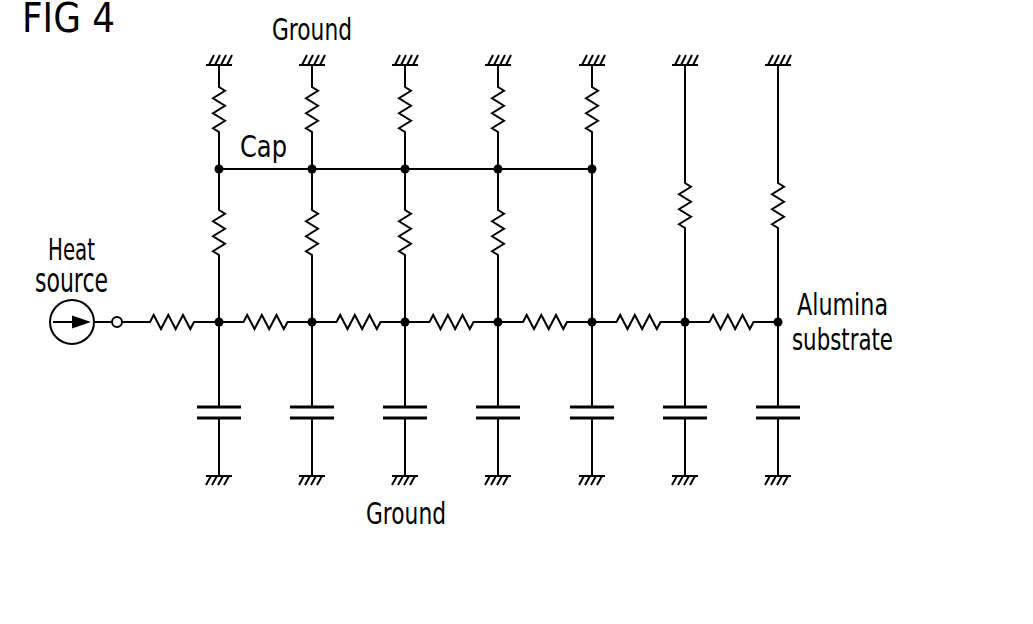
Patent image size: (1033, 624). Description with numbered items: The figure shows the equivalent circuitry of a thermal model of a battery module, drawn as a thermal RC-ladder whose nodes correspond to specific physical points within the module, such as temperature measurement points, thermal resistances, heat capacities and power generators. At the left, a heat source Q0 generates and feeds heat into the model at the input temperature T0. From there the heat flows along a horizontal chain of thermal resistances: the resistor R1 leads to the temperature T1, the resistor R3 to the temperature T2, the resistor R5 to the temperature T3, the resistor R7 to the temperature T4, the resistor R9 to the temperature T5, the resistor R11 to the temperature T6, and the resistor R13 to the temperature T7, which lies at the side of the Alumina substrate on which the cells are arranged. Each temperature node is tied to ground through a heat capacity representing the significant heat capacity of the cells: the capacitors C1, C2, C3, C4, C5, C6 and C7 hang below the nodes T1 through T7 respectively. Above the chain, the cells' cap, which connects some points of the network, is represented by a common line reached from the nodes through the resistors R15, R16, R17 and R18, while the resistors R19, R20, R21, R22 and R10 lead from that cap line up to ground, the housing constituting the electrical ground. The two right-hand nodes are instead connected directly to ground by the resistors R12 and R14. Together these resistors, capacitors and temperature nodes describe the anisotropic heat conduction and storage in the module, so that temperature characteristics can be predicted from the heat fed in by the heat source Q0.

The heat source Q0 is at (60, 322).
The temperature T0 is at (116, 344).
The temperature T1 is at (206, 344).
The temperature T2 is at (299, 344).
The temperature T3 is at (392, 344).
The temperature T4 is at (485, 344).
The temperature T5 is at (578, 344).
The temperature T6 is at (672, 344).
The temperature T7 is at (765, 344).
The resistor R1 is at (170, 300).
The resistor R3 is at (265, 300).
The resistor R5 is at (358, 300).
The resistor R7 is at (451, 300).
The resistor R9 is at (545, 300).
The resistor R11 is at (638, 300).
The resistor R13 is at (731, 300).
The resistor R10 is at (566, 117).
The resistor R12 is at (659, 193).
The resistor R14 is at (752, 193).
The resistor R15 is at (193, 245).
The resistor R16 is at (286, 245).
The resistor R17 is at (379, 245).
The resistor R18 is at (472, 245).
The resistor R19 is at (193, 117).
The resistor R20 is at (286, 117).
The resistor R21 is at (379, 117).
The resistor R22 is at (472, 117).
The capacitor C1 is at (203, 399).
The capacitor C2 is at (296, 399).
The capacitor C3 is at (389, 399).
The capacitor C4 is at (482, 399).
The capacitor C5 is at (576, 399).
The capacitor C6 is at (669, 399).
The capacitor C7 is at (762, 399).